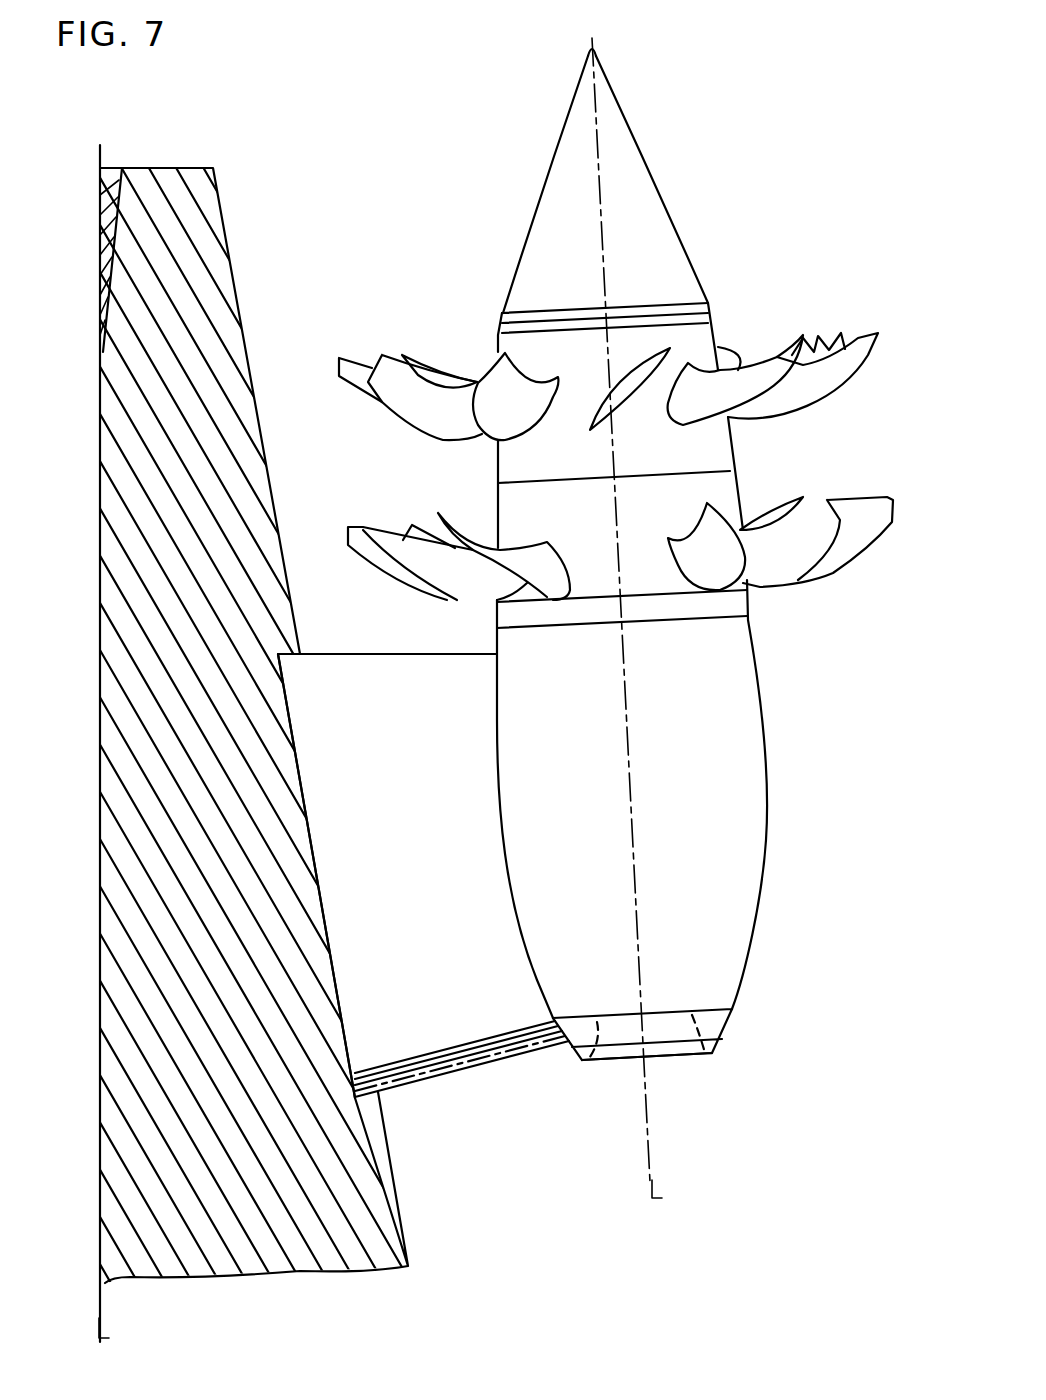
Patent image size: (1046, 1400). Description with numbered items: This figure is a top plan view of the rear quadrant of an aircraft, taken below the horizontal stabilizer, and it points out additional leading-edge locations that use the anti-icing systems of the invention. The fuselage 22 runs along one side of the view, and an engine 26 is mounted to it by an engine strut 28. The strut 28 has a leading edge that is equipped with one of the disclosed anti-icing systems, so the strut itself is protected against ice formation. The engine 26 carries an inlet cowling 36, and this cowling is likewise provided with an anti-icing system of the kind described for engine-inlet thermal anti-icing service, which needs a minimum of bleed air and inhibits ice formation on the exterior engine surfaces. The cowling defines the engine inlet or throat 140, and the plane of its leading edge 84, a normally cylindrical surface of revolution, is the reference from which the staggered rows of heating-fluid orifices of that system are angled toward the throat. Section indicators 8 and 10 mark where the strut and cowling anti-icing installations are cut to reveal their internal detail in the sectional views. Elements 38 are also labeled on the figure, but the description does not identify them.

The fuselage 22 is at (229, 257).
The engine 26 is at (766, 724).
The fins 38 is at (868, 333).
The engine strut 28 is at (355, 654).
The inlet cowling 36 is at (713, 1050).
The leading edge 84 is at (713, 1053).
The engine inlet or throat 140 is at (628, 1073).
The section line 8- 8 is at (463, 1027).
The section line 10- 10 is at (663, 1010).